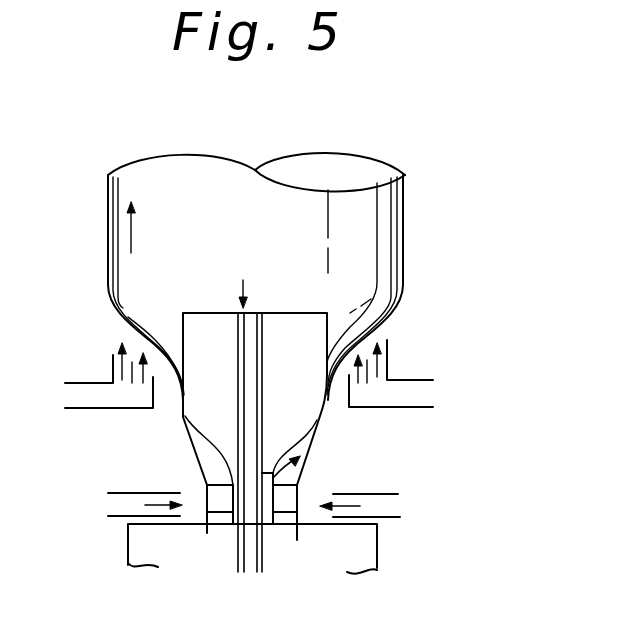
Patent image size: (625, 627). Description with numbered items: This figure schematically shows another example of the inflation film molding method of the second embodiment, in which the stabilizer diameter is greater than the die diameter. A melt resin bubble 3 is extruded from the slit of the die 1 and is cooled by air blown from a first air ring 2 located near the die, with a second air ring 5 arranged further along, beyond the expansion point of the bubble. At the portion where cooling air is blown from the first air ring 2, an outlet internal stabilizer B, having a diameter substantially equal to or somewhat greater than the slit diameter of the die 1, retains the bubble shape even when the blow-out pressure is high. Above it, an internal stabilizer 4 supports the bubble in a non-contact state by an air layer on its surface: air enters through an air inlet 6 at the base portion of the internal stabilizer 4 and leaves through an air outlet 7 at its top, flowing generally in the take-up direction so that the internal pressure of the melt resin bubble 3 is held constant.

The die 1 is at (381, 543).
The first air ring 2 is at (381, 495).
The melt resin bubble 3 is at (405, 237).
The internal stabilizer 4 is at (310, 337).
The second air ring 5 is at (413, 407).
The air inlet 6 is at (265, 497).
The air outlet 7 is at (250, 327).
The outlet internal stabilizer B is at (227, 497).